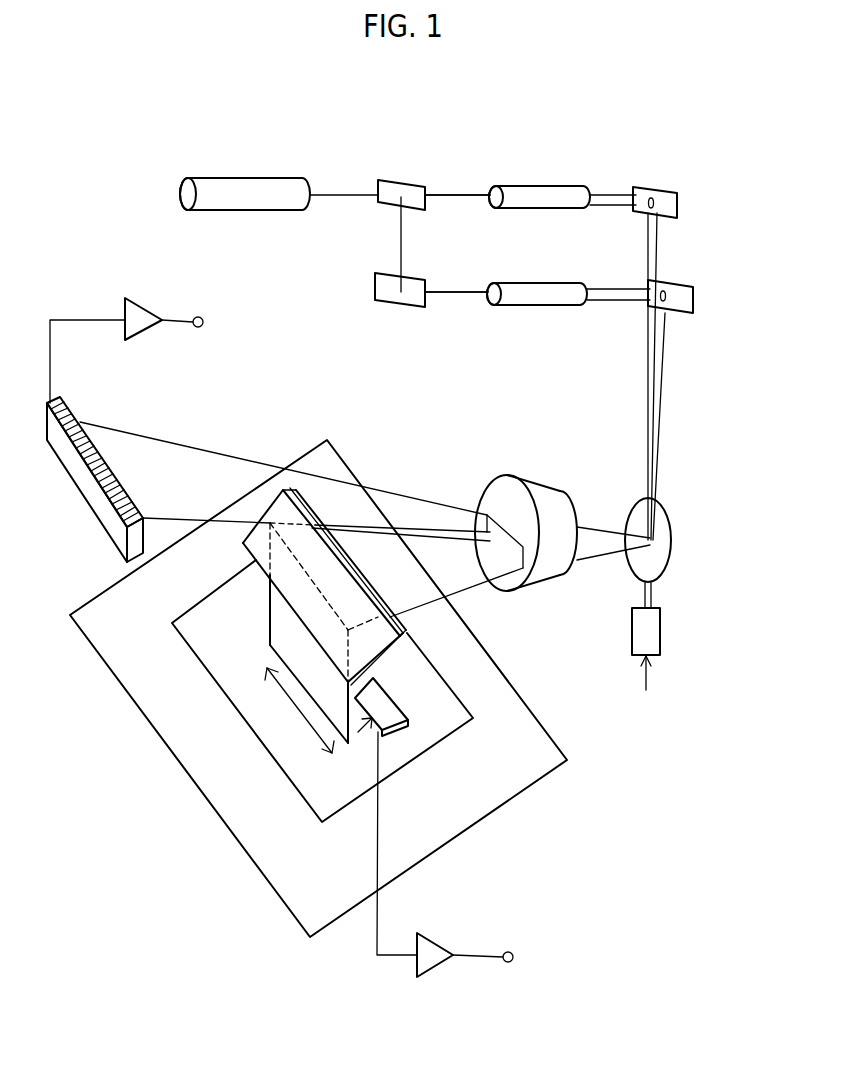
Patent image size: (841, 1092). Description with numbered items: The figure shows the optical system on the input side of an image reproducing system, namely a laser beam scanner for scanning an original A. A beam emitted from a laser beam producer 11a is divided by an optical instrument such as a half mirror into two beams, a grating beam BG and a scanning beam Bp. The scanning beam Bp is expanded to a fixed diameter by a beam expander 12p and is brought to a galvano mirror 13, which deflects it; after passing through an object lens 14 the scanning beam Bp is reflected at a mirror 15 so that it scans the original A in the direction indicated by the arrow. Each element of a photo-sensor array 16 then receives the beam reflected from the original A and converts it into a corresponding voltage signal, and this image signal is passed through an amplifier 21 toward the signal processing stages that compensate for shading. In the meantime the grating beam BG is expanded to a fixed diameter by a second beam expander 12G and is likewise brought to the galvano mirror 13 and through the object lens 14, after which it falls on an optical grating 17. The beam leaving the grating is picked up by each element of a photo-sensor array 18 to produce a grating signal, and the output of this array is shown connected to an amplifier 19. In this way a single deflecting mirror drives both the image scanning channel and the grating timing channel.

The laser beam producer 11a is at (268, 178).
The beam expander 12G is at (522, 190).
The beam expander 12p is at (537, 307).
The grating beam BG is at (463, 207).
The scanning beam Bp is at (452, 298).
The galvano mirror 13 is at (665, 535).
The object lens 14 is at (533, 484).
The mirror 15 is at (278, 488).
The photo-sensor array 16 is at (398, 727).
The optical grating 17 is at (63, 407).
The photo-sensor array 18 is at (75, 440).
The amplifier 19 is at (147, 303).
The amplifier 21 is at (425, 967).
The original A is at (435, 723).